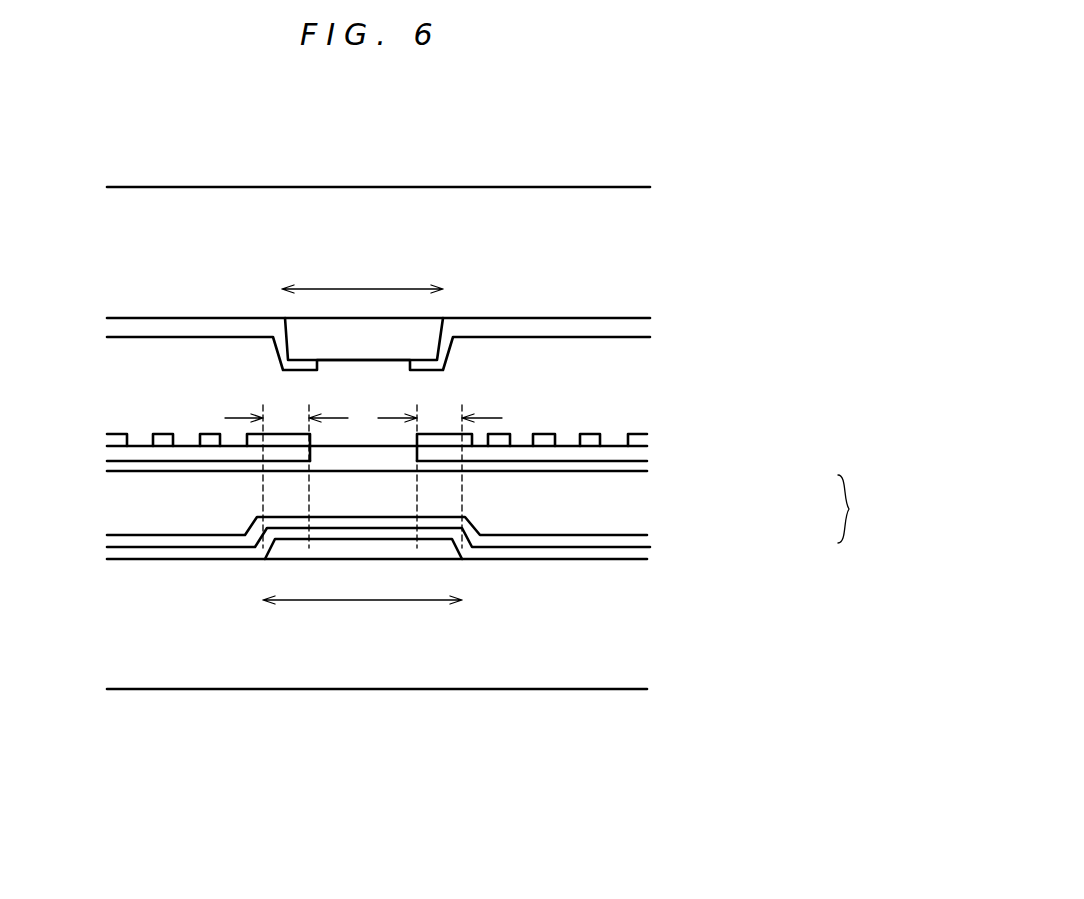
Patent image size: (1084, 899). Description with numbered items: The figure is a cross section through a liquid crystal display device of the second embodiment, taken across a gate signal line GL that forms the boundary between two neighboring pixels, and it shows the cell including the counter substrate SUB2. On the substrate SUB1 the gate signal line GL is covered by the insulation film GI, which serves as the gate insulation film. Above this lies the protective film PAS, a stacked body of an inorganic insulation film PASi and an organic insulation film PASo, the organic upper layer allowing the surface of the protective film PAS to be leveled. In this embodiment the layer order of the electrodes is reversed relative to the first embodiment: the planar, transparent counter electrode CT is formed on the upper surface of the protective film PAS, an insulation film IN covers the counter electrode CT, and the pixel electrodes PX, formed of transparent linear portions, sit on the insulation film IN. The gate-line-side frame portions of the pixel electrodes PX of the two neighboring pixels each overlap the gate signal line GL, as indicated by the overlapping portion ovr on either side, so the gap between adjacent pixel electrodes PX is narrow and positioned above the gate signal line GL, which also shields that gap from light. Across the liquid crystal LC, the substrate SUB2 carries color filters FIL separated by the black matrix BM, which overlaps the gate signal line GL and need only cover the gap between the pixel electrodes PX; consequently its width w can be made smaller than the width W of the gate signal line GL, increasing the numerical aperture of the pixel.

The substrate SUB2 is at (561, 205).
The color filter FIL is at (150, 327).
The black matrix BM is at (368, 337).
The width of the black matrix w is at (362, 272).
The liquid crystal LC is at (147, 386).
The overlapping portion ovr is at (363, 459).
The pixel electrode PX is at (543, 436).
The counter electrode CT is at (560, 465).
The insulation film IN is at (647, 455).
The organic insulation film PASo is at (612, 498).
The inorganic insulation film PASi is at (633, 540).
The protective film PAS is at (878, 509).
The insulation film GI is at (582, 555).
The gate signal line GL is at (406, 552).
The width of the gate signal line W is at (362, 584).
The substrate SUB1 is at (345, 663).